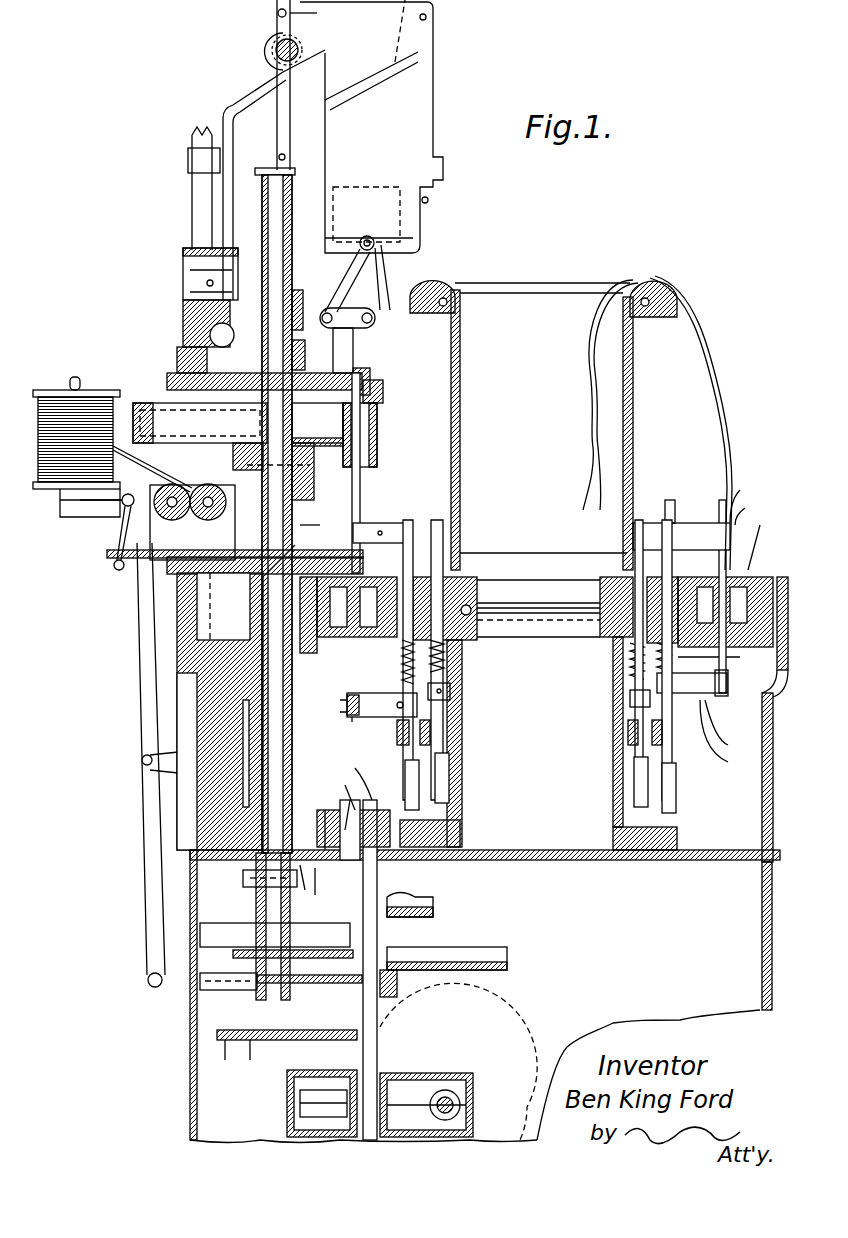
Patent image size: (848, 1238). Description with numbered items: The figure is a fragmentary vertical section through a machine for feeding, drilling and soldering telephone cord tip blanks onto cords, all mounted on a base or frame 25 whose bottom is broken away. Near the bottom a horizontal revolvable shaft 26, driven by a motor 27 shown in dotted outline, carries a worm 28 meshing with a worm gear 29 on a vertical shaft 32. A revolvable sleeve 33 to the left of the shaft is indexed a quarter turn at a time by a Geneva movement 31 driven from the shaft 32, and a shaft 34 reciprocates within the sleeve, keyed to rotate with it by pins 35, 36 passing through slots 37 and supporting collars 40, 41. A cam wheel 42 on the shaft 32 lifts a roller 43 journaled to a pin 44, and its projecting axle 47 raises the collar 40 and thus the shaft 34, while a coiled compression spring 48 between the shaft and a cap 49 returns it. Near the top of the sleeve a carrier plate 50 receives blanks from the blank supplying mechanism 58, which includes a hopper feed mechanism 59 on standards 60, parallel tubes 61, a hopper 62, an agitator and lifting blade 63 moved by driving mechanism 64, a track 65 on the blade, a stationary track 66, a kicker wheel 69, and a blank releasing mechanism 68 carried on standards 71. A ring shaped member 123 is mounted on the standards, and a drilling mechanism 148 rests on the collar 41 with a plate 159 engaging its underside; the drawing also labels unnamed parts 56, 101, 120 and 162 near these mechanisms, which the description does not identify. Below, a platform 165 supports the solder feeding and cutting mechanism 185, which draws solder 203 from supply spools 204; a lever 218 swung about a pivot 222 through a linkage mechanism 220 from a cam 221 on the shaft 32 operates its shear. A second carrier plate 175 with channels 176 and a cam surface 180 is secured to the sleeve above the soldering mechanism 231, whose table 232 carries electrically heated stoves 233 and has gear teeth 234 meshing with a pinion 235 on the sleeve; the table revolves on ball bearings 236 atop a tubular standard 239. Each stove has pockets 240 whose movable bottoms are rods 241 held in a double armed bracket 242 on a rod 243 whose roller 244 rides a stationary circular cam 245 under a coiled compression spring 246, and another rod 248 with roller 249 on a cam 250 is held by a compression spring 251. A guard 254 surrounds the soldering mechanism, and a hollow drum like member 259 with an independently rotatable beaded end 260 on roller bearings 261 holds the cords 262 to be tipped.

The base or frame 25 is at (190, 1032).
The revolvable shaft 26 is at (450, 1092).
The motor 27 is at (458, 1061).
The worm 28 is at (465, 1108).
The worm gear 29 is at (300, 1100).
The Geneva movement 31 is at (458, 945).
The vertically disposed shaft 32 is at (378, 1030).
The revolvable sleeve 33 is at (331, 807).
The shaft 34 is at (330, 800).
The pin 35 is at (311, 815).
The pin 36 is at (290, 480).
The vertically disposed slots 37 is at (238, 424).
The collar 40 is at (243, 875).
The collar 41 is at (313, 470).
The cam wheel 42 is at (435, 903).
The roller 43 is at (318, 885).
The pin 44 is at (348, 785).
The axle 47 is at (351, 804).
The coiled compression spring 48 is at (278, 178).
The cap 49 is at (290, 180).
The carrier plate 50 is at (380, 385).
The casing 56 is at (742, 562).
The blank supplying mechanism 58 is at (225, 100).
The hopper feed mechanism 59 is at (405, 85).
The standards 60 is at (355, 360).
The parallel tubes 61 is at (235, 95).
The hopper 62 is at (278, 13).
The agitator and lifting blade 63 is at (395, 45).
The driving mechanism 64 is at (385, 290).
The runway or track 65 is at (355, 80).
The stationary runway or track 66 is at (325, 52).
The blank releasing mechanism 68 is at (190, 252).
The kicker wheel 69 is at (278, 45).
The standards 71 is at (192, 190).
The block 101 is at (316, 330).
The body 120 is at (195, 360).
The ring shaped member 123 is at (383, 398).
The drilling mechanism 148 is at (380, 432).
The plate 159 is at (250, 535).
The block 162 is at (372, 372).
The platform 165 is at (135, 568).
The second carrier plate 175 is at (296, 552).
The channels 176 is at (360, 520).
The cam surface 180 is at (311, 521).
The core solder feeding and cutting mechanism 185 is at (115, 530).
The solder 203 is at (160, 462).
The supply spools 204 is at (52, 390).
The lever 218 is at (137, 645).
The linkage mechanism 220 is at (268, 992).
The cam 221 is at (420, 983).
The pivot 222 is at (142, 762).
The soldering mechanism 231 is at (768, 537).
The table 232 is at (322, 705).
The electrically heated stoves 233 is at (688, 575).
The gear teeth 234 is at (723, 695).
The pinion 235 is at (245, 620).
The ball bearings 236 is at (472, 570).
The tubular standard 239 is at (462, 725).
The pockets 240 is at (380, 540).
The rod 241 is at (360, 695).
The double armed bracket 242 is at (325, 721).
The rod 243 is at (445, 520).
The roller 244 is at (365, 773).
The stationary circular cam 245 is at (455, 815).
The coiled compression spring 246 is at (450, 650).
The rod 248 is at (445, 540).
The roller 249 is at (452, 760).
The stationary circular cam 250 is at (455, 780).
The compression spring 251 is at (452, 672).
The guard 254 is at (763, 506).
The hollow drum like member 259 is at (635, 418).
The upper beaded end 260 is at (678, 300).
The roller bearings 261 is at (645, 320).
The cords 262 is at (588, 365).